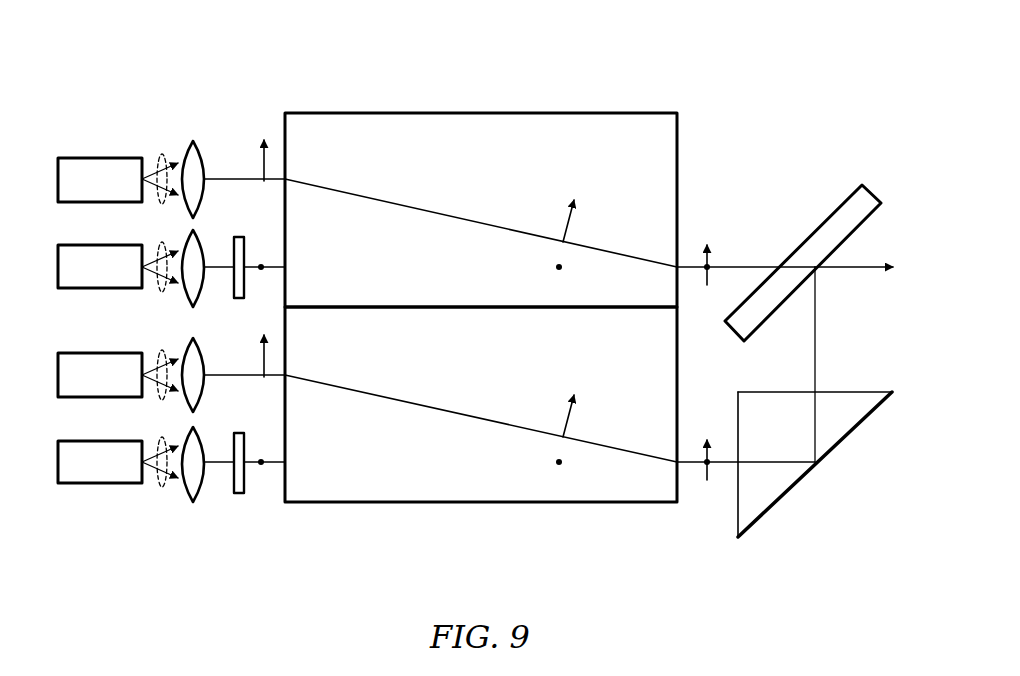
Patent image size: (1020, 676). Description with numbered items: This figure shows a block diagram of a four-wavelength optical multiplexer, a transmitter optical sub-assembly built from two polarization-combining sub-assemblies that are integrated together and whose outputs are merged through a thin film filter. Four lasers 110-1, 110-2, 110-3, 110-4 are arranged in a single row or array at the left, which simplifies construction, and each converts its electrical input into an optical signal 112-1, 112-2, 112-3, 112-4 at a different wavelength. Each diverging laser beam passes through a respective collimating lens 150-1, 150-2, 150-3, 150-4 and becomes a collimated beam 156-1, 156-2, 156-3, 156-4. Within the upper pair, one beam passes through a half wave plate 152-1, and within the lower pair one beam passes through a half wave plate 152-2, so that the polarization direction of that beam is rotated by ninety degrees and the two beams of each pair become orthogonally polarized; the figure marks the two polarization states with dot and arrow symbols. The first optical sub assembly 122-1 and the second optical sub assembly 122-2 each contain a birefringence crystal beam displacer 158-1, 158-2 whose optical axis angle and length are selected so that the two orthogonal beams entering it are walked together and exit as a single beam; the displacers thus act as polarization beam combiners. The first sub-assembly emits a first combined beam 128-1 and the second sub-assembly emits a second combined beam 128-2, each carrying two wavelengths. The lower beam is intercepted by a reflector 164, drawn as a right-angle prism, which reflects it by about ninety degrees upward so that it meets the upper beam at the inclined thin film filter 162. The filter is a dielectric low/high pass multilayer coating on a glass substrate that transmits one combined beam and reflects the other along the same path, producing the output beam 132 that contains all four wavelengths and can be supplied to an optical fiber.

The laser 110-1 is at (95, 158).
The laser 110-2 is at (130, 288).
The laser 110-3 is at (95, 353).
The laser 110-4 is at (93, 483).
The optical signal 112-1 is at (163, 154).
The optical signal 112-2 is at (163, 242).
The optical signal 112-3 is at (163, 400).
The optical signal 112-4 is at (163, 487).
The collimating lens 150-1 is at (190, 143).
The collimating lens 150-2 is at (197, 236).
The collimating lens 150-3 is at (200, 412).
The collimating lens 150-4 is at (188, 497).
The half wave plate 152-1 is at (233, 284).
The half wave plate 152-2 is at (233, 492).
The collimated beam 156-1 is at (216, 178).
The collimated beam 156-2 is at (270, 264).
The collimated beam 156-3 is at (235, 377).
The collimated beam 156-4 is at (270, 464).
The first optical sub assembly 122-1 is at (381, 59).
The second optical sub assembly 122-2 is at (381, 558).
The birefringence crystal beam displacer 158-1 is at (582, 113).
The birefringence crystal beam displacer 158-2 is at (583, 503).
The first combined beam 128-1 is at (742, 266).
The second combined beam 128-2 is at (722, 466).
The output beam 132 is at (865, 270).
The thin film filter 162 is at (841, 205).
The reflector 164 is at (797, 484).